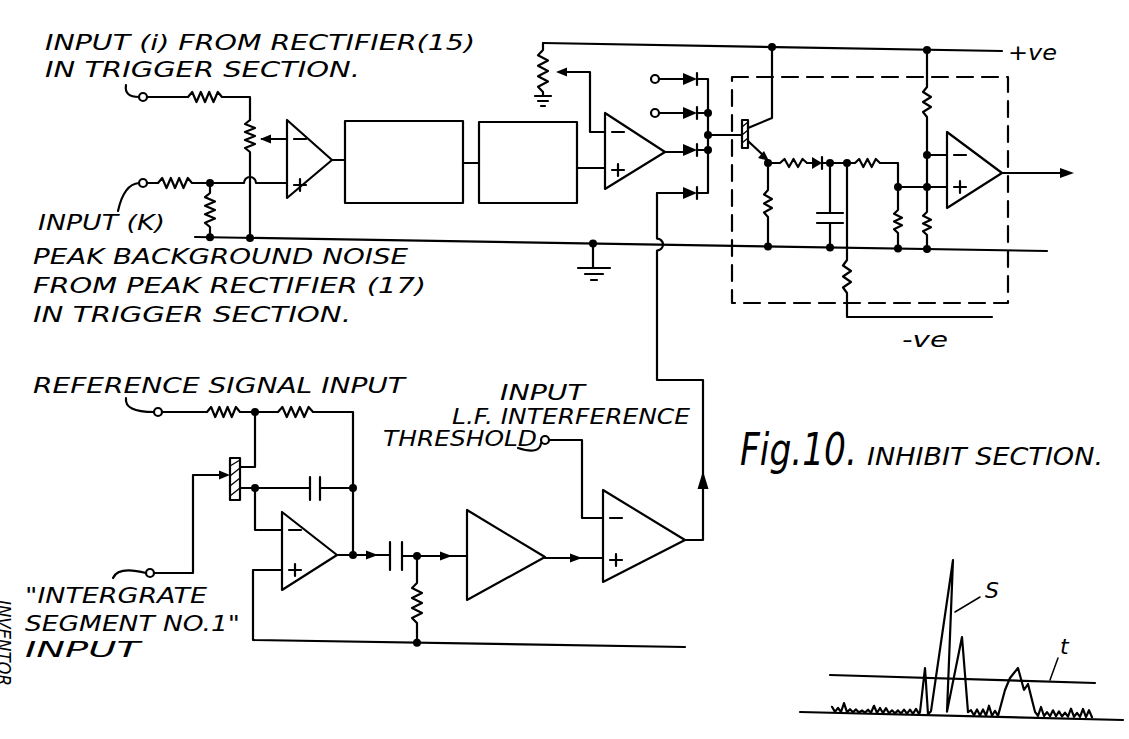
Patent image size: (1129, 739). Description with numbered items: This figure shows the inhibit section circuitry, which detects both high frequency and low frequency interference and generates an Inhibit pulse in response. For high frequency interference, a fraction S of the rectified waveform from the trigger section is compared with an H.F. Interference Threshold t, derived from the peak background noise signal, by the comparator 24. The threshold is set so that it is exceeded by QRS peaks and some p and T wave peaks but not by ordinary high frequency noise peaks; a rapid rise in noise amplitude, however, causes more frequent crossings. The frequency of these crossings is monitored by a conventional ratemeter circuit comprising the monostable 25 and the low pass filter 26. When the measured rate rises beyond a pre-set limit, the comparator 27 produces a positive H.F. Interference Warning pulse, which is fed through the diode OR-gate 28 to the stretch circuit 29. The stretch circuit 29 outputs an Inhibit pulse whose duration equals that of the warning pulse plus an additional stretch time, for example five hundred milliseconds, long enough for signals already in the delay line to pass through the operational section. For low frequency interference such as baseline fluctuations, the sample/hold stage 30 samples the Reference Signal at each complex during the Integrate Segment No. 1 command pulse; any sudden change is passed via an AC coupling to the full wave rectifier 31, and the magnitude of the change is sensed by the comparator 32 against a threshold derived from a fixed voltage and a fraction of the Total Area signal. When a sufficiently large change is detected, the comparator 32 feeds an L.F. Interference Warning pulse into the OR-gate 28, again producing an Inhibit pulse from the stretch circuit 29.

The comparator 24 is at (308, 178).
The monostable 25 is at (430, 203).
The low pass filter 26 is at (497, 205).
The comparator 27 is at (636, 170).
The diode OR-gate 28 is at (681, 157).
The stretch circuit 29 is at (880, 134).
The sample/hold stage 30 is at (318, 574).
The full wave rectifier 31 is at (518, 578).
The comparator 32 is at (652, 560).